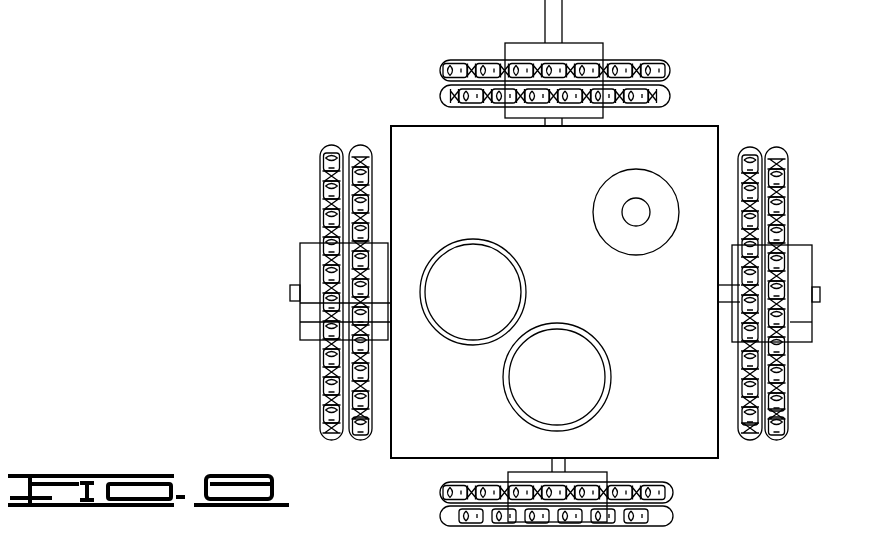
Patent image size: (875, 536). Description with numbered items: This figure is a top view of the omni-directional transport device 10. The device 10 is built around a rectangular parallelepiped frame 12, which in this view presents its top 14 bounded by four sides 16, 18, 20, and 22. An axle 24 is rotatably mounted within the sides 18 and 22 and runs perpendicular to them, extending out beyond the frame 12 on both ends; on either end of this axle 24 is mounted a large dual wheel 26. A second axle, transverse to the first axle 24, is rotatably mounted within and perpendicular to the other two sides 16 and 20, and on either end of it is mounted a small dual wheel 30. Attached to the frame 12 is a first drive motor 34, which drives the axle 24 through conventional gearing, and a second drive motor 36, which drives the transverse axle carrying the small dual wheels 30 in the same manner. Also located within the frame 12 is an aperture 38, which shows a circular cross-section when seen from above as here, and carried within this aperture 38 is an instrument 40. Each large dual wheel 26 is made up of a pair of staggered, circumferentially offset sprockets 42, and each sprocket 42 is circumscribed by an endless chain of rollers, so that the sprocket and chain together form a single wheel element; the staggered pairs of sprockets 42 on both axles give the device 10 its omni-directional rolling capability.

The omni-directional transport device 10 is at (776, 70).
The frame 12 is at (556, 36).
The top 14 is at (453, 169).
The side 16 is at (675, 127).
The side 18 is at (720, 456).
The side 20 is at (418, 460).
The side 22 is at (391, 128).
The axle 24 is at (816, 290).
The large dual wheel 26 is at (313, 172).
The small dual wheel 30 is at (674, 71).
The first drive motor 34 is at (478, 240).
The second drive motor 36 is at (576, 333).
The aperture 38 is at (650, 187).
The instrument 40 is at (624, 220).
The sprocket 42 is at (742, 168).